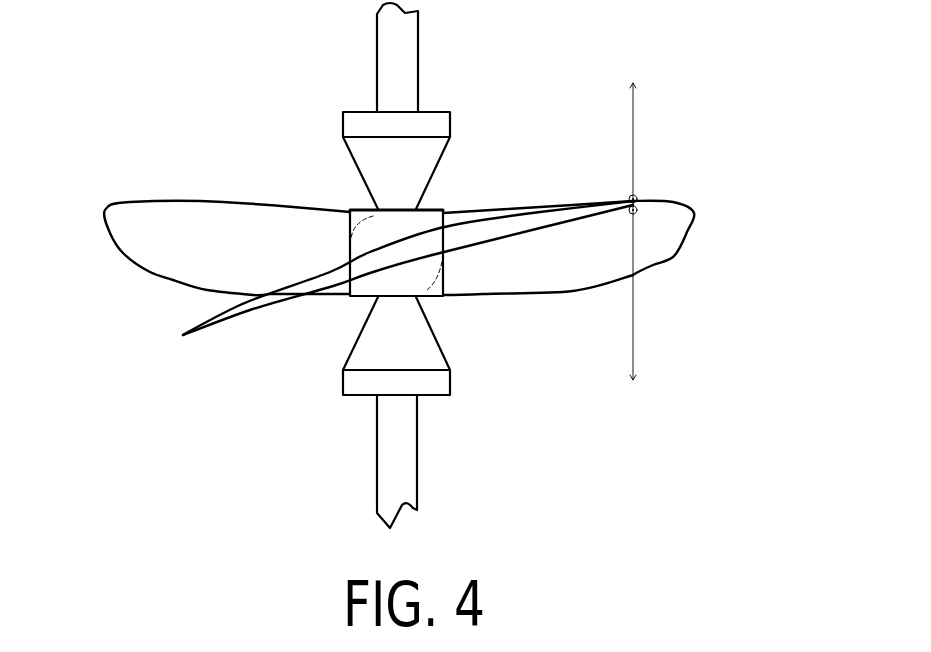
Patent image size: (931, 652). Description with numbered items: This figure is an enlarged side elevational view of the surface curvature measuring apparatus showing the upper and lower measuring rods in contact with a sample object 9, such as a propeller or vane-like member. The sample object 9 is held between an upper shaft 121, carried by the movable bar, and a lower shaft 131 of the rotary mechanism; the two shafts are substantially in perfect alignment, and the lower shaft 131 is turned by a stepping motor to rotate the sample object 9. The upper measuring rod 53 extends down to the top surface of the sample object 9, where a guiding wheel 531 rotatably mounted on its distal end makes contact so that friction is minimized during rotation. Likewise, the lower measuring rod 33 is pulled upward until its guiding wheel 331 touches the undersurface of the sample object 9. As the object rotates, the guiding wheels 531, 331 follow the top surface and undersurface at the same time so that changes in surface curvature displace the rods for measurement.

The sample object 9 is at (202, 193).
The upper shaft 121 is at (395, 42).
The lower shaft 131 is at (390, 453).
The upper measuring rod 53 is at (633, 115).
The guiding wheel 531 is at (637, 197).
The lower measuring rod 33 is at (635, 339).
The guiding wheel 331 is at (640, 206).